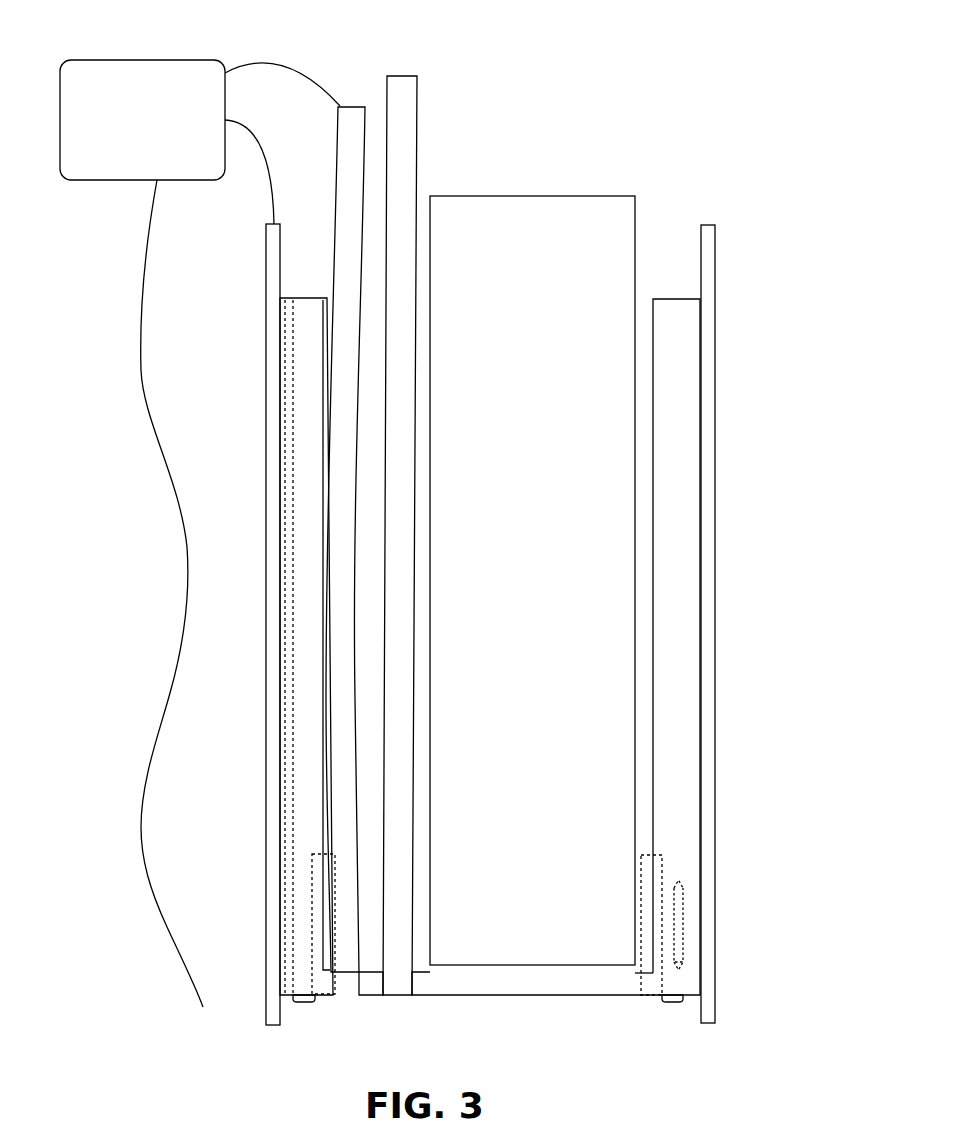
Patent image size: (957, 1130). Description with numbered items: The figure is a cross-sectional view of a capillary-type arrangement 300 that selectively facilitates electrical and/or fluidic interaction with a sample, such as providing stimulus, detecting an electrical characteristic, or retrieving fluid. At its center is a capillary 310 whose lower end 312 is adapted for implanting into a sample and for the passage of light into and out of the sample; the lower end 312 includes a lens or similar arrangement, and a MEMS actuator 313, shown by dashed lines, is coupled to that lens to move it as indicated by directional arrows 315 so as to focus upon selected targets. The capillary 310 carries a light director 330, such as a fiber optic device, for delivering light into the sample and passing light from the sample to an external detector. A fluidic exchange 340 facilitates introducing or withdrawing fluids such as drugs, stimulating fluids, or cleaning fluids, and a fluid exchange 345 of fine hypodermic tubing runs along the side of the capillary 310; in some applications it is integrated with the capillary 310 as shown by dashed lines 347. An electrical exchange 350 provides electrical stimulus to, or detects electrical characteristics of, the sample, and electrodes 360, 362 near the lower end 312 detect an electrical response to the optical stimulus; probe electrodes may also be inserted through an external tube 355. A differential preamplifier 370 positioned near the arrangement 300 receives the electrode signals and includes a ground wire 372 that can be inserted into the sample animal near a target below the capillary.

The capillary-type arrangement 300 is at (714, 18).
The capillary 310 is at (683, 333).
The lower end 312 is at (455, 997).
The MEMS actuator 313 is at (312, 862).
The directional arrows 315 is at (684, 893).
The light director 330 is at (635, 282).
The fluidic exchange 340 is at (417, 100).
The fluid exchange 345 is at (715, 250).
The dashed lines 347 is at (286, 299).
The electrical exchange 350 is at (338, 140).
The external tube 355 is at (266, 248).
The electrode 360 is at (305, 1004).
The electrode 362 is at (672, 1003).
The differential preamplifier 370 is at (186, 61).
The ground wire 372 is at (142, 378).